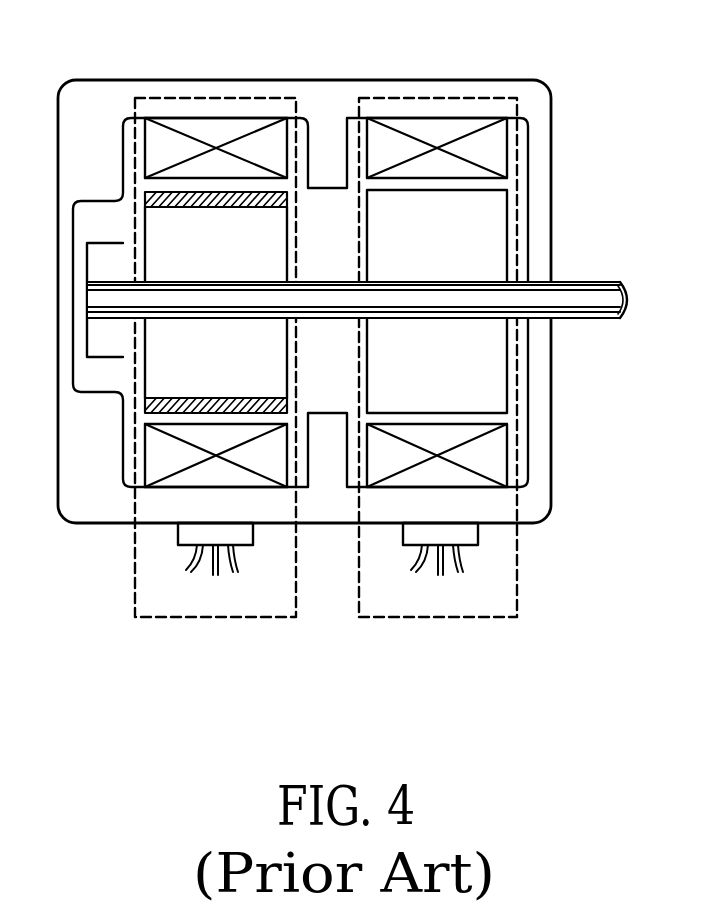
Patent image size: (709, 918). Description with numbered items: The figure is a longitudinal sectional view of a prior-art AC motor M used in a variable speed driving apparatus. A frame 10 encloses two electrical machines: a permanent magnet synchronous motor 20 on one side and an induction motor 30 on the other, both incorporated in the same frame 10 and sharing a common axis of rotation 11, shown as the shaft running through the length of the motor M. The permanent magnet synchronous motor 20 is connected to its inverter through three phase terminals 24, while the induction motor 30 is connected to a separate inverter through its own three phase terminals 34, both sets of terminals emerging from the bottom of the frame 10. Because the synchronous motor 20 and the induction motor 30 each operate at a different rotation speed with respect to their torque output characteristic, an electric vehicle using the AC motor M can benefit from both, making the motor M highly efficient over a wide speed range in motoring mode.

The AC motor M is at (442, 72).
The frame 10 is at (540, 115).
The common axis of rotation 11 is at (605, 282).
The permanent magnet synchronous motor 20 is at (208, 617).
The three phase terminals 24 is at (195, 558).
The induction motor 30 is at (428, 617).
The three phase terminals 34 is at (463, 557).